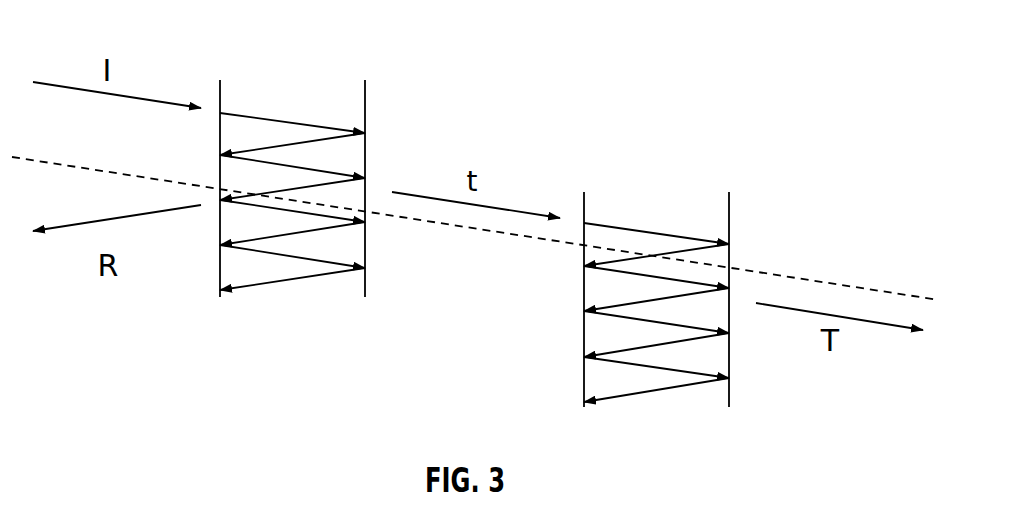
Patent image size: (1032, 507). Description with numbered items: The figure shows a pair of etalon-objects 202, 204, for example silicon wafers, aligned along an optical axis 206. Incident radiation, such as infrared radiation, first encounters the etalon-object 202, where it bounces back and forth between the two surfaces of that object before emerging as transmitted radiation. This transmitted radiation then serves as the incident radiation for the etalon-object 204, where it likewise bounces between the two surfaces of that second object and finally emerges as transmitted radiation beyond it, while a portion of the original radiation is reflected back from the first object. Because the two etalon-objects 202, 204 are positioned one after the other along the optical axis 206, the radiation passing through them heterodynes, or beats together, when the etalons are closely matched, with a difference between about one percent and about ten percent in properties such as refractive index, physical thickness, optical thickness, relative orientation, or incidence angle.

The etalon-object 202 is at (294, 80).
The etalon-object 204 is at (653, 184).
The optical axis 206 is at (858, 263).